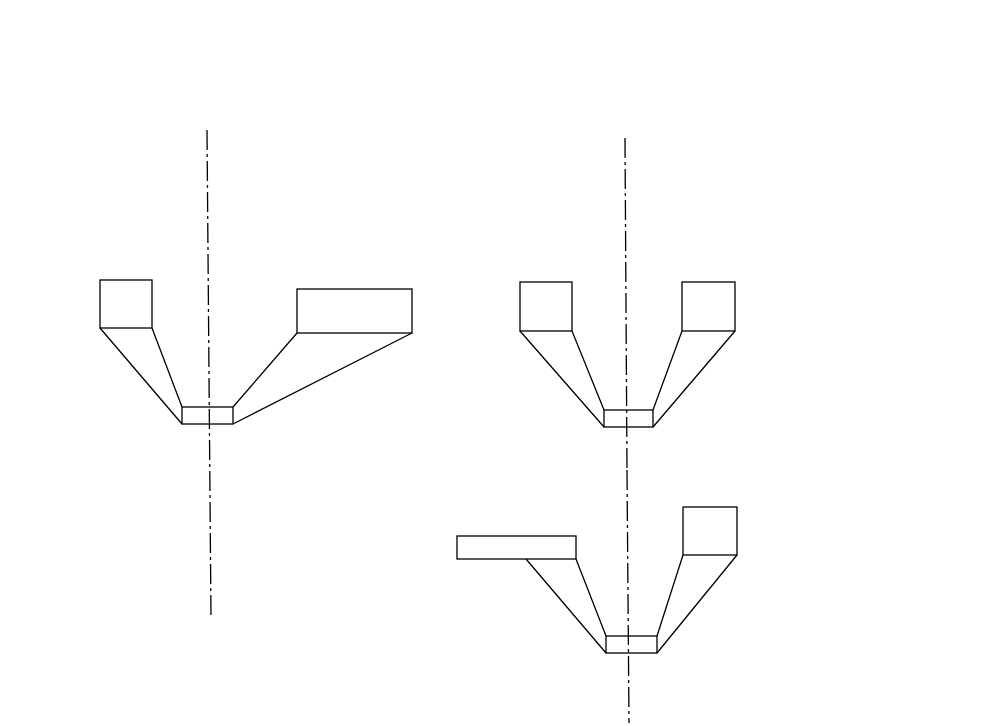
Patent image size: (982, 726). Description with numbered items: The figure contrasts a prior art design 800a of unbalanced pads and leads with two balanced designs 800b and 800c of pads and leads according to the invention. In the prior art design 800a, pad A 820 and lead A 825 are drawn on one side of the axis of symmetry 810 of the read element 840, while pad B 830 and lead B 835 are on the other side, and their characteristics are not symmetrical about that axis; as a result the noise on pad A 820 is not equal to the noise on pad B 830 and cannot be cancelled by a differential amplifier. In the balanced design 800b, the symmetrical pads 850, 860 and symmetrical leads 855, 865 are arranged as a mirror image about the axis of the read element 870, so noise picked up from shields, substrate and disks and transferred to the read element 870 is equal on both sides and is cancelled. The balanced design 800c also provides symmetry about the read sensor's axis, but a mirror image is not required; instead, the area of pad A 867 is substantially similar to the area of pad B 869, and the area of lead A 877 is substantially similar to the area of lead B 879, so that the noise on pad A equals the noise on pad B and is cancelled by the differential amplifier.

In FIG. 8A, the prior art design 800a is at (165, 98).
In FIG. 8A, the axis of symmetry 810 is at (210, 573).
In FIG. 8A, the pad A 820 is at (108, 292).
In FIG. 8A, the lead A 825 is at (138, 375).
In FIG. 8A, the pad B 830 is at (306, 303).
In FIG. 8A, the lead B 835 is at (335, 372).
In FIG. 8A, the read element 840 is at (218, 425).
In FIG. 8B, the balanced design 800b is at (722, 168).
In FIG. 8B, the pad 850 is at (528, 295).
In FIG. 8B, the lead 855 is at (560, 380).
In FIG. 8B, the pad 860 is at (723, 293).
In FIG. 8B, the lead 865 is at (695, 357).
In FIG. 8B, the read element 870 is at (640, 427).
In FIG. 8C, the balanced design 800c is at (792, 512).
In FIG. 8C, the pad A 867 is at (468, 548).
In FIG. 8C, the pad B 869 is at (730, 535).
In FIG. 8C, the lead A 877 is at (545, 583).
In FIG. 8C, the lead B 879 is at (697, 585).